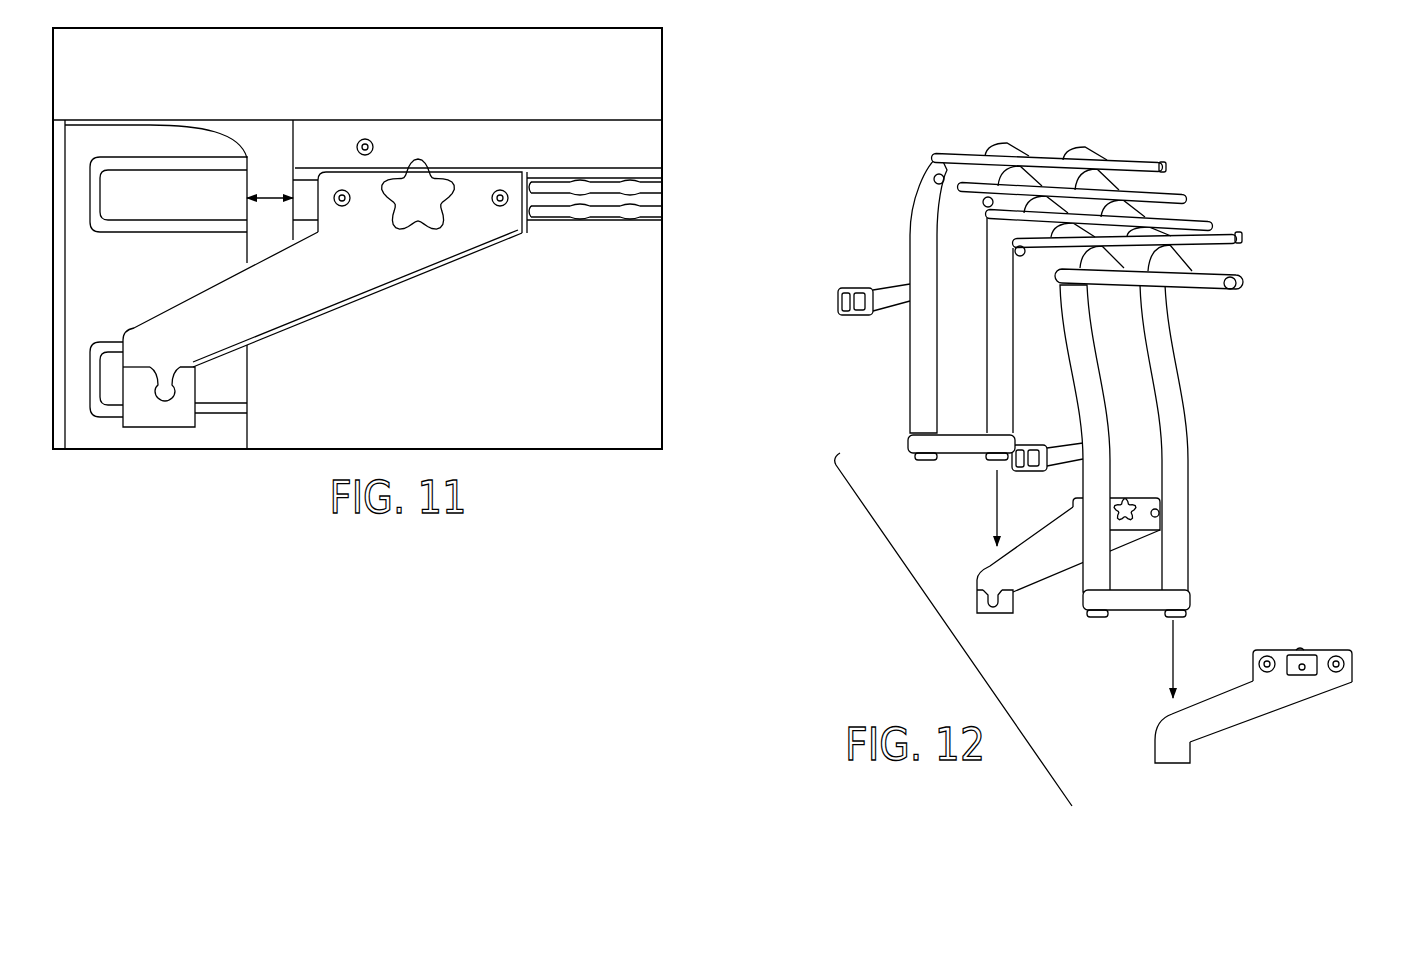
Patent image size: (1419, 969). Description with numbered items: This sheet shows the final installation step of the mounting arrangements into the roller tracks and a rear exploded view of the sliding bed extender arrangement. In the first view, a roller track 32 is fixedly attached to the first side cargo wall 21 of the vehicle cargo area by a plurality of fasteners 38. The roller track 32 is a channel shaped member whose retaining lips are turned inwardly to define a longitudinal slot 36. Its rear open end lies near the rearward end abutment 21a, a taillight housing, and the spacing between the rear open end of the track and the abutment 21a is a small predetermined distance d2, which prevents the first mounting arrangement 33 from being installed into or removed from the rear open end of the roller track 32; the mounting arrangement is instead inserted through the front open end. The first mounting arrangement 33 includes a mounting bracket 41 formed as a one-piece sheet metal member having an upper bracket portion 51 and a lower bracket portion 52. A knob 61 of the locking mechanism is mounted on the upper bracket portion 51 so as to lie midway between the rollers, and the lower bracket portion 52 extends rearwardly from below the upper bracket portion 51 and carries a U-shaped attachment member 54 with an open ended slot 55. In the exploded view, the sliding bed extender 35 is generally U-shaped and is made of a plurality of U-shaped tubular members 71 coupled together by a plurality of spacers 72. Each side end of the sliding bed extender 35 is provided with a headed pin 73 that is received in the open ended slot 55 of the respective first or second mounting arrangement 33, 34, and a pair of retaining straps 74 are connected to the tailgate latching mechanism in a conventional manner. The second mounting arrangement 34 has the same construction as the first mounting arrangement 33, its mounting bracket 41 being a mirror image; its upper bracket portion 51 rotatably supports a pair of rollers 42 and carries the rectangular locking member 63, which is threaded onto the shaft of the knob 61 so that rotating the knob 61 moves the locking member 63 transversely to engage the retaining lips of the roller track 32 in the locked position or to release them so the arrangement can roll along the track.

In FIG. 11, the first side cargo wall 21 is at (594, 336).
In FIG. 11, the rearward end abutment 21a is at (250, 154).
In FIG. 11, the roller track 32 is at (562, 227).
In FIG. 11, the first mounting arrangement 33 is at (303, 280).
In FIG. 12, the first mounting arrangement 33 is at (1075, 523).
In FIG. 12, the second mounting arrangement 34 is at (1329, 655).
In FIG. 12, the sliding bed extender 35 is at (1110, 216).
In FIG. 11, the longitudinal slot 36 is at (655, 195).
In FIG. 11, the fastener 38 is at (373, 142).
In FIG. 11, the mounting bracket 41 is at (380, 297).
In FIG. 12, the mounting bracket 41 is at (1043, 583).
In FIG. 12, the roller 42 is at (1328, 708).
In FIG. 11, the upper bracket portion 51 is at (470, 222).
In FIG. 12, the upper bracket portion 51 is at (1073, 507).
In FIG. 11, the lower bracket portion 52 is at (150, 314).
In FIG. 12, the lower bracket portion 52 is at (990, 566).
In FIG. 11, the U-shaped attachment member 54 is at (195, 387).
In FIG. 12, the U-shaped attachment member 54 is at (1001, 614).
In FIG. 11, the open ended slot 55 is at (168, 360).
In FIG. 12, the open ended slot 55 is at (988, 581).
In FIG. 11, the knob 61 is at (428, 187).
In FIG. 12, the knob 61 is at (1124, 518).
In FIG. 12, the locking member 63 is at (1284, 655).
In FIG. 12, the U-shaped tubular member 71 is at (1093, 393).
In FIG. 12, the spacer 72 is at (1198, 252).
In FIG. 12, the headed pin 73 is at (1190, 600).
In FIG. 12, the retaining strap 74 is at (888, 306).
In FIG. 11, the predetermined distance d2 is at (269, 205).